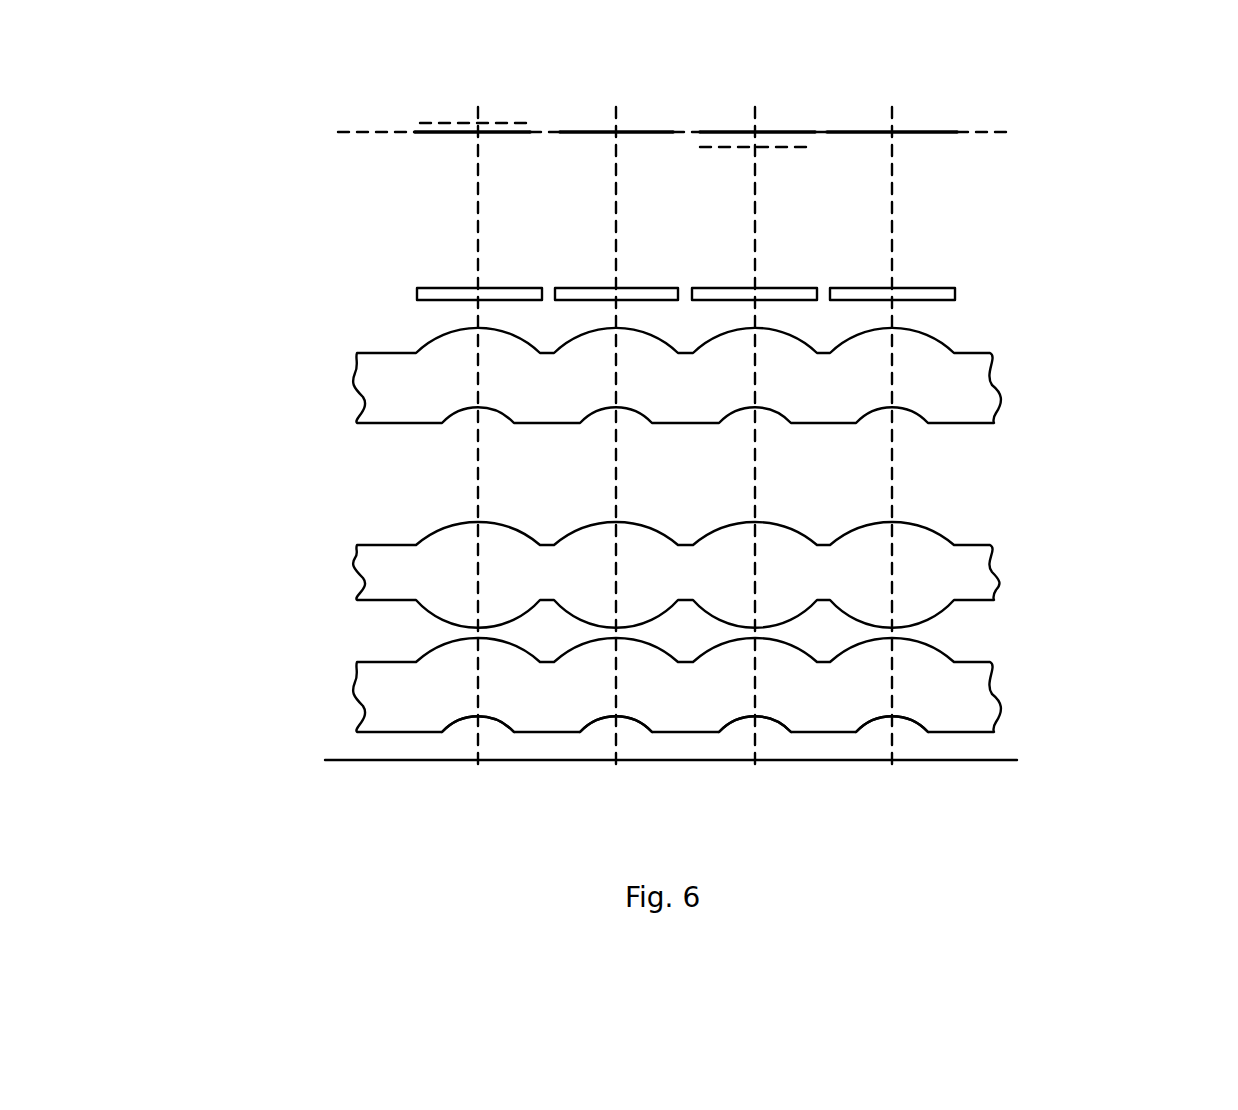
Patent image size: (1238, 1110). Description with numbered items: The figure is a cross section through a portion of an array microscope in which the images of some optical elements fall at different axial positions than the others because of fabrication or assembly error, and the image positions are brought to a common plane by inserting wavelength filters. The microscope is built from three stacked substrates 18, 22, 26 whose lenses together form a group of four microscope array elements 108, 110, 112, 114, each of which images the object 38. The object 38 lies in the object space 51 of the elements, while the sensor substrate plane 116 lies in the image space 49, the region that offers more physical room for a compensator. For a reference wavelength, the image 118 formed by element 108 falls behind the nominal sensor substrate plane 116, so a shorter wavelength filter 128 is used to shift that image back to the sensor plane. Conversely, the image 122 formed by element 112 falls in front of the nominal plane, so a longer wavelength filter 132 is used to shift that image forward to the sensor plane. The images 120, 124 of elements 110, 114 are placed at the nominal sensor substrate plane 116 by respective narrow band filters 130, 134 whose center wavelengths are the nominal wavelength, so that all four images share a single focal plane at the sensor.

The stacked substrate 18 is at (323, 692).
The stacked substrate 22 is at (333, 572).
The stacked substrate 26 is at (323, 377).
The object 38 is at (322, 753).
The image space 49 is at (962, 215).
The object space 51 is at (983, 752).
The microscope array element 108 is at (463, 726).
The microscope array element 110 is at (604, 726).
The microscope array element 112 is at (742, 726).
The microscope array element 114 is at (880, 726).
The sensor substrate plane 116 is at (338, 132).
The image 118 is at (458, 122).
The image 120 is at (604, 140).
The image 122 is at (775, 153).
The image 124 is at (908, 142).
The shorter wavelength filter 128 is at (490, 283).
The narrow band filter 130 is at (635, 283).
The longer wavelength filter 132 is at (770, 283).
The narrow band filter 134 is at (915, 283).